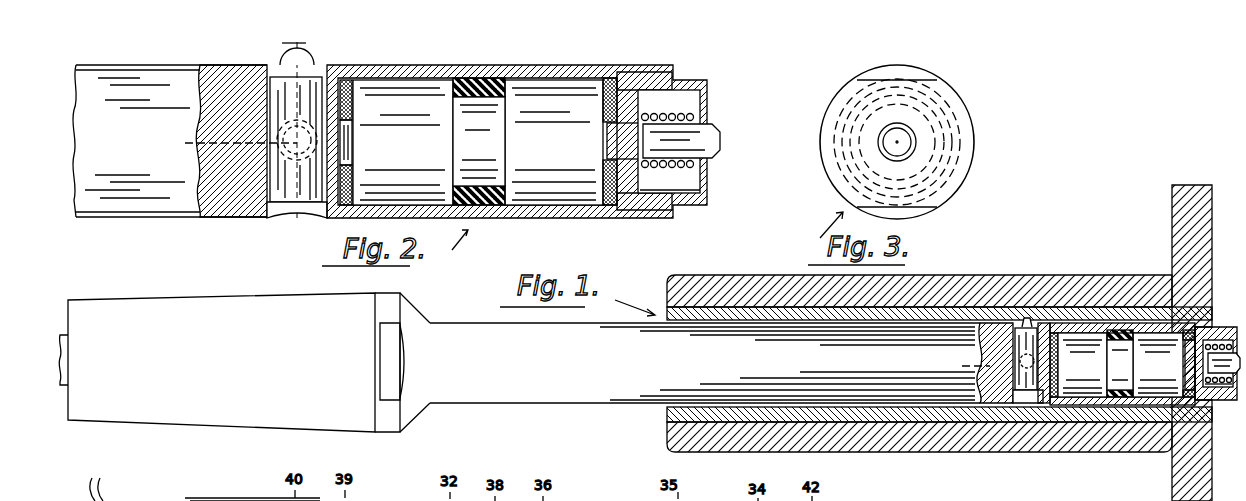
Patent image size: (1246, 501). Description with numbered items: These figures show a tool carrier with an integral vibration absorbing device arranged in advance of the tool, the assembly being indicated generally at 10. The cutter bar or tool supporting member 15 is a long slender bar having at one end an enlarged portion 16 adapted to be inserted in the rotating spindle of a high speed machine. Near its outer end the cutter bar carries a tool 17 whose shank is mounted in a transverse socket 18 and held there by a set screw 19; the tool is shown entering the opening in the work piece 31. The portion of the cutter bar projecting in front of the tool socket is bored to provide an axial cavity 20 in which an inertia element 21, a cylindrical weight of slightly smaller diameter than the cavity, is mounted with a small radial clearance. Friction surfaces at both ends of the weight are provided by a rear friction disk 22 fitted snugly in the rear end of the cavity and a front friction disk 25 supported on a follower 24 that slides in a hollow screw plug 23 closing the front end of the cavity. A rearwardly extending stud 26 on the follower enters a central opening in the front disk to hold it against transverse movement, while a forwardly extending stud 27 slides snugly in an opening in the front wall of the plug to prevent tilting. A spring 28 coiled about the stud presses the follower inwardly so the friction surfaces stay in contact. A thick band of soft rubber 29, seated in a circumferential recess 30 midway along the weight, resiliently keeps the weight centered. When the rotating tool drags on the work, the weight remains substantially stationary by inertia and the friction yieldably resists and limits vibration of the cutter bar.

In FIG. 2, the silencer assembly 10 is at (303, 34).
In FIG. 2, the tool supporting member 15 is at (148, 200).
In FIG. 1, the tool supporting member 15 is at (637, 388).
In FIG. 1, the enlarged portion 16 is at (305, 417).
In FIG. 2, the tool 17 is at (303, 100).
In FIG. 1, the tool 17 is at (1030, 327).
In FIG. 2, the transverse socket 18 is at (280, 210).
In FIG. 1, the transverse socket 18 is at (1027, 404).
In FIG. 2, the set screw 19 is at (228, 148).
In FIG. 1, the set screw 19 is at (964, 363).
In FIG. 2, the axial cavity 20 is at (563, 72).
In FIG. 1, the axial cavity 20 is at (1090, 405).
In FIG. 2, the inertia element 21 is at (375, 130).
In FIG. 1, the inertia element 21 is at (1080, 345).
In FIG. 2, the rear friction disk 22 is at (353, 172).
In FIG. 1, the rear friction disk 22 is at (1054, 333).
In FIG. 2, the hollow screw plug 23 is at (678, 76).
In FIG. 3, the hollow screw plug 23 is at (955, 176).
In FIG. 1, the hollow screw plug 23 is at (1215, 402).
In FIG. 2, the follower 24 is at (670, 181).
In FIG. 1, the follower 24 is at (1203, 400).
In FIG. 2, the front friction disk 25 is at (610, 80).
In FIG. 1, the front friction disk 25 is at (1187, 400).
In FIG. 2, the rearwardly extending stud 26 is at (607, 143).
In FIG. 1, the rearwardly extending stud 26 is at (1185, 362).
In FIG. 2, the forwardly extending stud 27 is at (708, 141).
In FIG. 3, the forwardly extending stud 27 is at (897, 140).
In FIG. 1, the forwardly extending stud 27 is at (1226, 374).
In FIG. 2, the spring 28 is at (690, 115).
In FIG. 1, the spring 28 is at (1220, 328).
In FIG. 2, the band of soft rubber 29 is at (490, 80).
In FIG. 1, the band of soft rubber 29 is at (1118, 335).
In FIG. 2, the circumferential recess 30 is at (490, 153).
In FIG. 1, the circumferential recess 30 is at (1120, 365).
In FIG. 1, the opening in the work piece 31 is at (1058, 440).